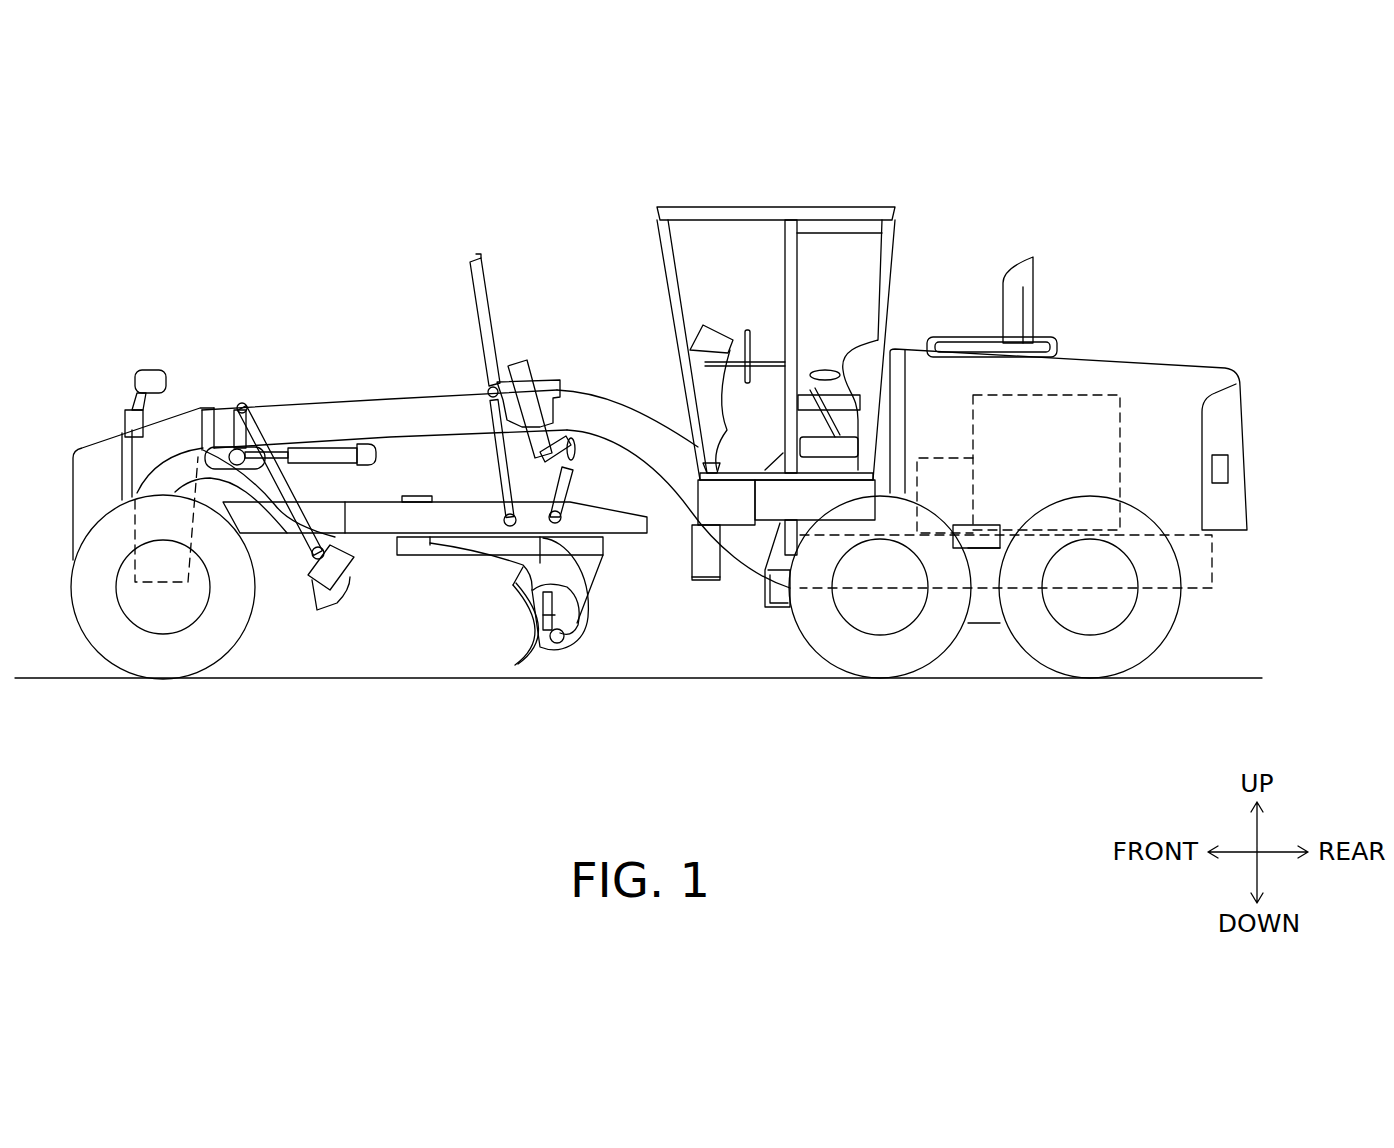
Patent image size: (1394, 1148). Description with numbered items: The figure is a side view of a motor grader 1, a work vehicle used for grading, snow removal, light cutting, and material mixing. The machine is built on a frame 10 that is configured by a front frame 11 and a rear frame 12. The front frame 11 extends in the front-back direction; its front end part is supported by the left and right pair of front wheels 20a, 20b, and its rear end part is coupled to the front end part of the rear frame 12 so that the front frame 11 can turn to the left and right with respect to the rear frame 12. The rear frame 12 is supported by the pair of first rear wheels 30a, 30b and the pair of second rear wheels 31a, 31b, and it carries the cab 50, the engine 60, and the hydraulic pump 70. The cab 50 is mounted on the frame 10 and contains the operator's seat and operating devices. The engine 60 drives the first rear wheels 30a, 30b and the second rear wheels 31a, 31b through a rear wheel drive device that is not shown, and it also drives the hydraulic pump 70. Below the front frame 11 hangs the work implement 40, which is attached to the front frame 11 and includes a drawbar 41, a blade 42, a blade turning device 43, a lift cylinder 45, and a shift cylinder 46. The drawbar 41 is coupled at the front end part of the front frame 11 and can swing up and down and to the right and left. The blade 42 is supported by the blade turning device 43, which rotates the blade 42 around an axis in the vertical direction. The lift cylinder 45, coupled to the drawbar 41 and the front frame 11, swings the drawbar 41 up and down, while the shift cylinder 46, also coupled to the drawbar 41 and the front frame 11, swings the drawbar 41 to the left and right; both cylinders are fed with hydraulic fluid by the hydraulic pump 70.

The motor grader 1 is at (479, 164).
The frame 10 is at (655, 397).
The front frame 11 is at (443, 395).
The rear frame 12 is at (995, 533).
The front wheel 20a is at (150, 670).
The front wheel 20b is at (163, 568).
The first rear wheel 30a is at (887, 660).
The first rear wheel 30b is at (880, 587).
The second rear wheel 31a is at (1085, 663).
The second rear wheel 31b is at (1090, 587).
The work implement 40 is at (392, 671).
The drawbar 41 is at (457, 500).
The blade 42 is at (531, 655).
The blade turning device 43 is at (453, 545).
The lift cylinder 45 is at (470, 303).
The shift cylinder 46 is at (570, 487).
The cab 50 is at (820, 207).
The engine 60 is at (1055, 395).
The hydraulic pump 70 is at (930, 458).